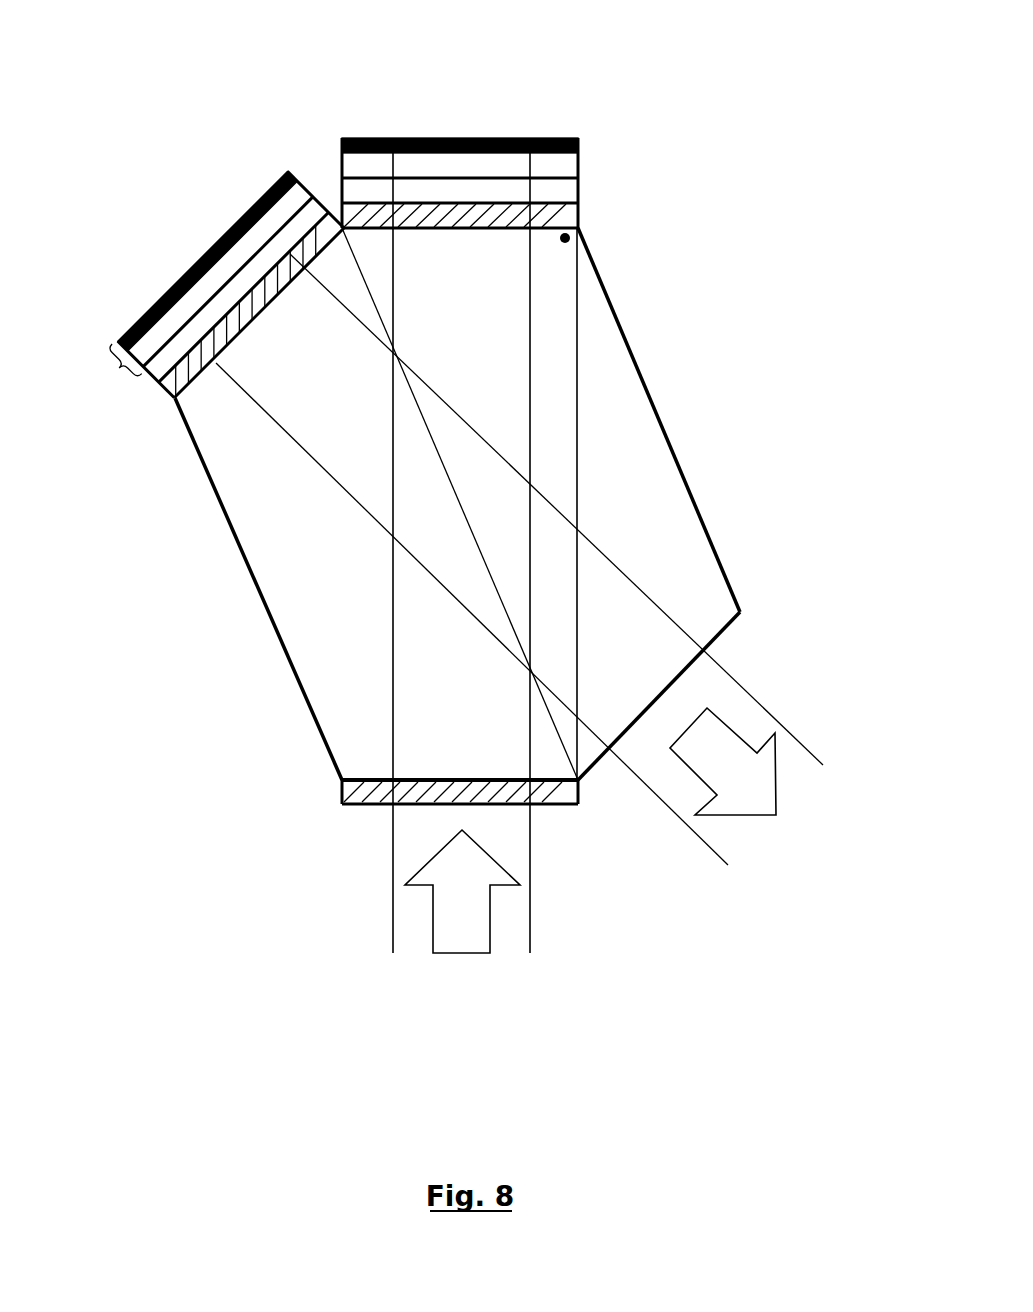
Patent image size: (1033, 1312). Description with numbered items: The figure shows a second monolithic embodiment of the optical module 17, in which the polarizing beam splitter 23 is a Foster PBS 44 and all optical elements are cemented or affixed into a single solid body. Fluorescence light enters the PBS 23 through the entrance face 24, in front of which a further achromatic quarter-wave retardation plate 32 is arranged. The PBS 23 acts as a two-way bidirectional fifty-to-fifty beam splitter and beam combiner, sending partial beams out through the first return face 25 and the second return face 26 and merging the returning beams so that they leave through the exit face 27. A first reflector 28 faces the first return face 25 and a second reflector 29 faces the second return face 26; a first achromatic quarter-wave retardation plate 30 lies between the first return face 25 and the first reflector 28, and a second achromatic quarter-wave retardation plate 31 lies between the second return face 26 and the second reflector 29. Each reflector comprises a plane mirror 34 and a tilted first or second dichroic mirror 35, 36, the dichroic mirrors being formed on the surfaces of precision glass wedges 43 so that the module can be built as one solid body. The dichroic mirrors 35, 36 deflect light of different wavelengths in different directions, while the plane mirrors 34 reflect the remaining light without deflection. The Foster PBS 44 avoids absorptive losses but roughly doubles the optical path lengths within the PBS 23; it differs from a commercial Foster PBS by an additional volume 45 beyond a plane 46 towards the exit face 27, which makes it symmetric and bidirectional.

The optical module 17 is at (656, 77).
The polarizing beam splitter 23 is at (263, 627).
The Foster PBS 44 is at (474, 553).
The entrance face 24 is at (345, 805).
The first return face 25 is at (272, 282).
The second return face 26 is at (550, 216).
The exit face 27 is at (731, 629).
The first reflector 28 is at (117, 366).
The second reflector 29 is at (340, 143).
The first achromatic quarter-wave retardation plate 30 is at (177, 383).
The second achromatic quarter-wave retardation plate 31 is at (568, 215).
The further achromatic quarter-wave retardation plate 32 is at (353, 792).
The plane mirror 34 is at (459, 139).
The first dichroic mirror 35 is at (187, 317).
The second dichroic mirror 36 is at (500, 177).
The precision glass wedge 43 is at (568, 163).
The additional volume 45 is at (653, 473).
The plane 46 is at (581, 417).